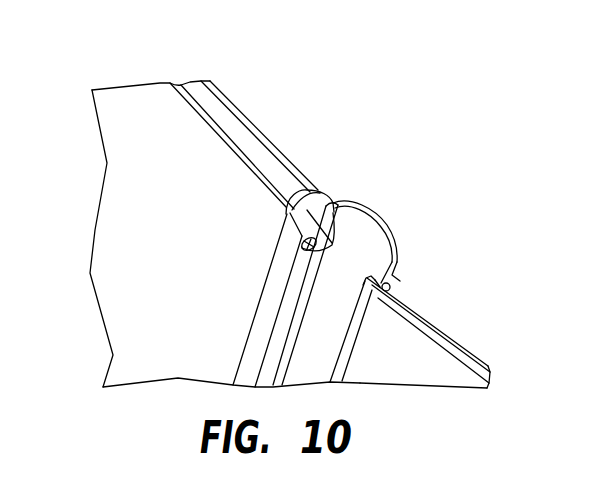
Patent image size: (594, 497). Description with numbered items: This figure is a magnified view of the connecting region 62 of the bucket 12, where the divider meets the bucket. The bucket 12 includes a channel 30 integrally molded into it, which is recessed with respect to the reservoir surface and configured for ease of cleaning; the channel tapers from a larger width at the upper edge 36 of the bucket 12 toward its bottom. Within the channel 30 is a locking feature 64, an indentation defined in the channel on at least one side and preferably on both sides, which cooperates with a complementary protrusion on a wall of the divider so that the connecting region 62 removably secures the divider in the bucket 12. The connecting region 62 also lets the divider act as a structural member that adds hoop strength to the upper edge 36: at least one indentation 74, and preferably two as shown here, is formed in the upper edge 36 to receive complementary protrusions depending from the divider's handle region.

The bucket 12 is at (260, 133).
The upper edge 36 is at (440, 338).
The connecting region 62 is at (447, 227).
The indentation 74 is at (307, 200).
The channel 30 is at (380, 225).
The locking feature 64 is at (348, 205).